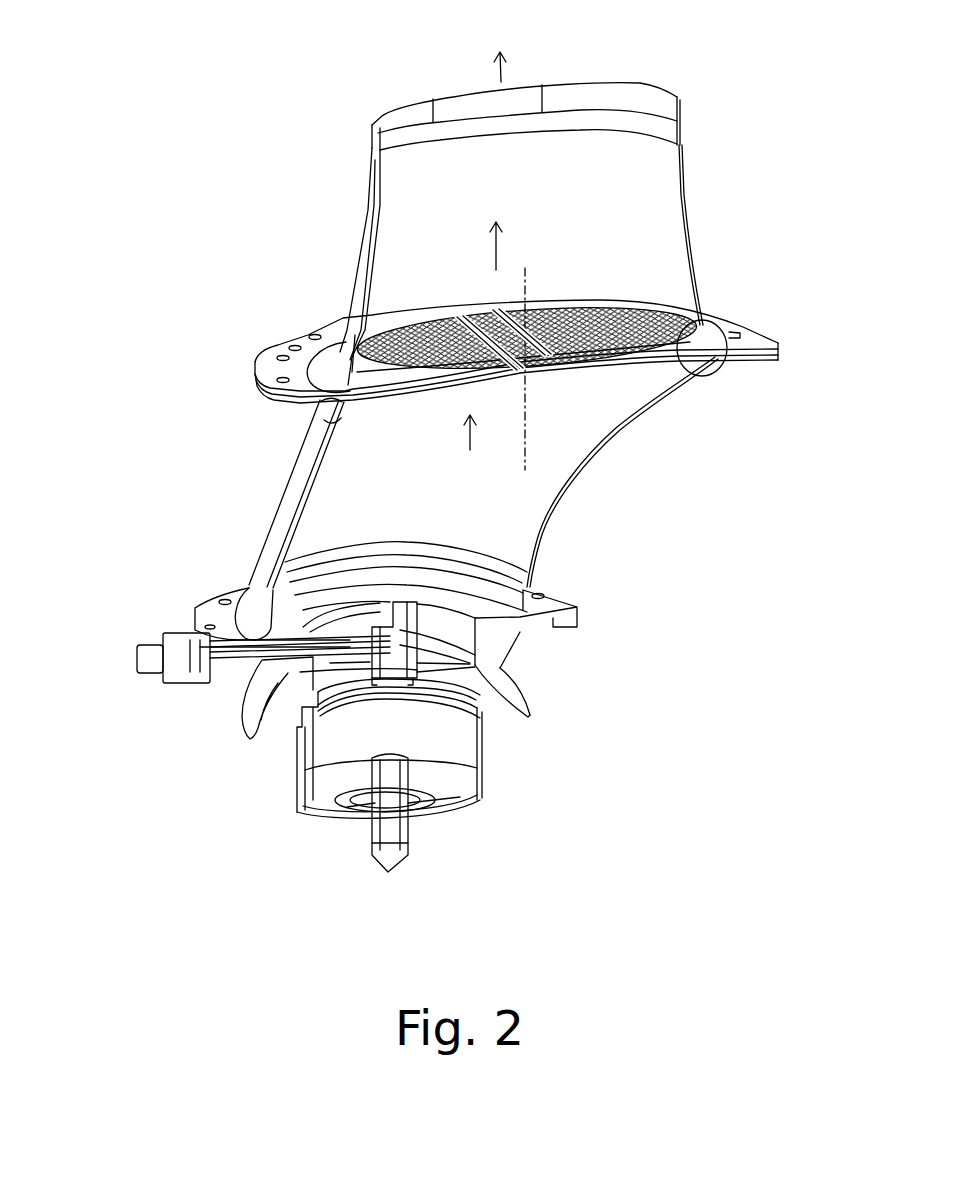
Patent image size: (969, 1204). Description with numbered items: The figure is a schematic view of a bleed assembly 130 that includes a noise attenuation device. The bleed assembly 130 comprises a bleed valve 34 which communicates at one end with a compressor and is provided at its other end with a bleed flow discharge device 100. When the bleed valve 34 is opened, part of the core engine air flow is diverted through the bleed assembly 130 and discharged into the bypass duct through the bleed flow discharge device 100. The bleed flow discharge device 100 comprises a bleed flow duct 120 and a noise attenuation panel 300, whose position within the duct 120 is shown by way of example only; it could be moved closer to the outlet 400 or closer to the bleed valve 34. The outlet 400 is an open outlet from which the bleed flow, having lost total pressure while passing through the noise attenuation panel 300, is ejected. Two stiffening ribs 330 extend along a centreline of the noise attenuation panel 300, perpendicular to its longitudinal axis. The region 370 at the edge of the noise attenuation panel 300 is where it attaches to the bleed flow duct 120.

The bleed flow discharge device 100 is at (762, 614).
The bleed assembly 130 is at (152, 143).
The bleed flow duct 120 is at (367, 224).
The outlet 400 is at (620, 105).
The noise attenuation panel 300 is at (620, 370).
The rib 330 is at (403, 385).
The region at the edge of the noise attenuation panel 370 is at (700, 367).
The bleed valve 34 is at (470, 813).